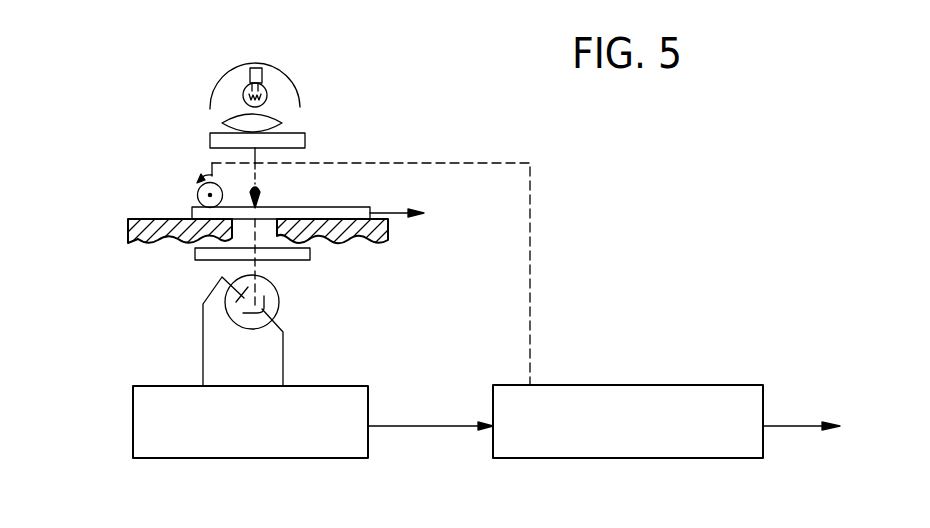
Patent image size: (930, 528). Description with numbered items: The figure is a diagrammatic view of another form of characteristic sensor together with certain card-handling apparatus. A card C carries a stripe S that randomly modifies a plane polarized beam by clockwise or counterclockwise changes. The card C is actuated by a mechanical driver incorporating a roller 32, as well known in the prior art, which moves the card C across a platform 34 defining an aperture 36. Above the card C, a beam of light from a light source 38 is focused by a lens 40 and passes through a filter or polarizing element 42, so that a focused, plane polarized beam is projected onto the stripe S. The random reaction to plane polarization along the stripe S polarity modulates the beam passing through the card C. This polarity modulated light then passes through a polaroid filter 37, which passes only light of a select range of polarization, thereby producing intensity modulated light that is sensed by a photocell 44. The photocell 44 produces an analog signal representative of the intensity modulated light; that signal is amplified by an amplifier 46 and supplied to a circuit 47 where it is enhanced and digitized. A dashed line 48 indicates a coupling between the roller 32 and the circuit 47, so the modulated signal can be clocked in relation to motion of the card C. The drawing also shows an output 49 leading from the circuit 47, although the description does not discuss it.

The roller 32 is at (197, 192).
The platform 34 is at (128, 240).
The aperture 36 is at (274, 232).
The polaroid filter 37 is at (195, 255).
The light source 38 is at (278, 70).
The lens 40 is at (282, 126).
The filter or polarizing element 42 is at (305, 141).
The photocell 44 is at (279, 292).
The amplifier 46 is at (333, 386).
The circuit 47 is at (657, 385).
The dashed line 48 is at (530, 247).
The output 49 is at (783, 426).
The stripe S is at (297, 207).
The card C is at (352, 202).